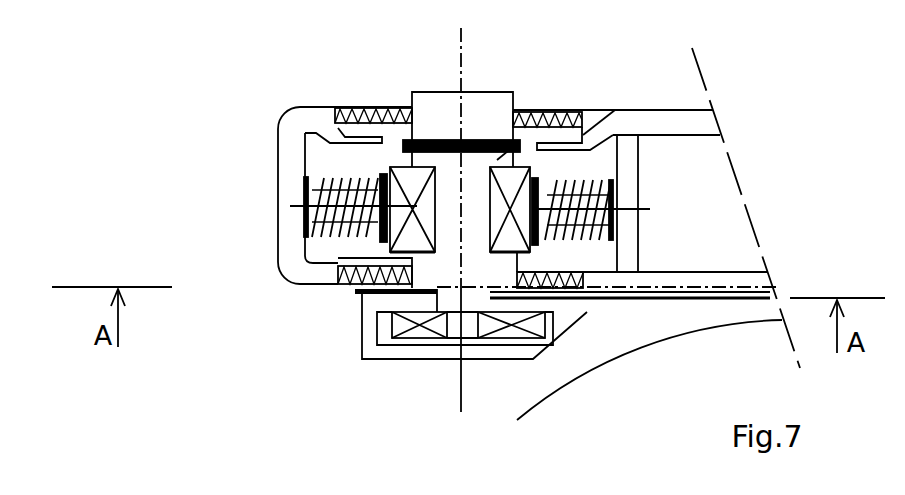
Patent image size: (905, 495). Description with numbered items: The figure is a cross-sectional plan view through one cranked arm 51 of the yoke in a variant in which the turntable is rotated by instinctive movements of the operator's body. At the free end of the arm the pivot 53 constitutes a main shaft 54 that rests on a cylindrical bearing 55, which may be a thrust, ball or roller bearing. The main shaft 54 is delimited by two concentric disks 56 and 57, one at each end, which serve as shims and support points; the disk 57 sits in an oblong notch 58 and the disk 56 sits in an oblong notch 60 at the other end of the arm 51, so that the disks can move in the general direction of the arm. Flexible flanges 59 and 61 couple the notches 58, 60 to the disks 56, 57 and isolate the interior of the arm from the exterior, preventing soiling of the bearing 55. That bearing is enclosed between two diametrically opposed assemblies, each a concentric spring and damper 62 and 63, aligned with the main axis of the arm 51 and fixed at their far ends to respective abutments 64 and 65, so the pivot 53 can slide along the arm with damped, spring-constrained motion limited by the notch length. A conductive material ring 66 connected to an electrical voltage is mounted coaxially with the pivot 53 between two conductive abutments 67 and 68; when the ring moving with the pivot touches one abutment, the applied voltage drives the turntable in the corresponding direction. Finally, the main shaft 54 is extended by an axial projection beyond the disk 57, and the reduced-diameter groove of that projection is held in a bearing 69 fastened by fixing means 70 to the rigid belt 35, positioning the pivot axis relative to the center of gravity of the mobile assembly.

The rigid belt 35 is at (693, 310).
The cranked arm 51 is at (300, 118).
The pivot 53 is at (433, 104).
The main shaft 54 is at (458, 243).
The cylindrical bearing 55 is at (340, 284).
The concentric disk 56 is at (562, 110).
The concentric disk 57 is at (500, 265).
The oblong notch 58 is at (355, 292).
The flexible flange 59 is at (583, 302).
The oblong notch 60 is at (333, 118).
The flexible flange 61 is at (385, 106).
The concentric spring and damper 62 is at (382, 228).
The concentric spring and damper 63 is at (610, 227).
The abutment 64 is at (297, 163).
The abutment 65 is at (623, 208).
The conductive material ring 66 is at (500, 130).
The conductive abutment 67 is at (328, 122).
The conductive abutment 68 is at (627, 110).
The bearing 69 is at (550, 338).
The fixing means 70 is at (385, 350).